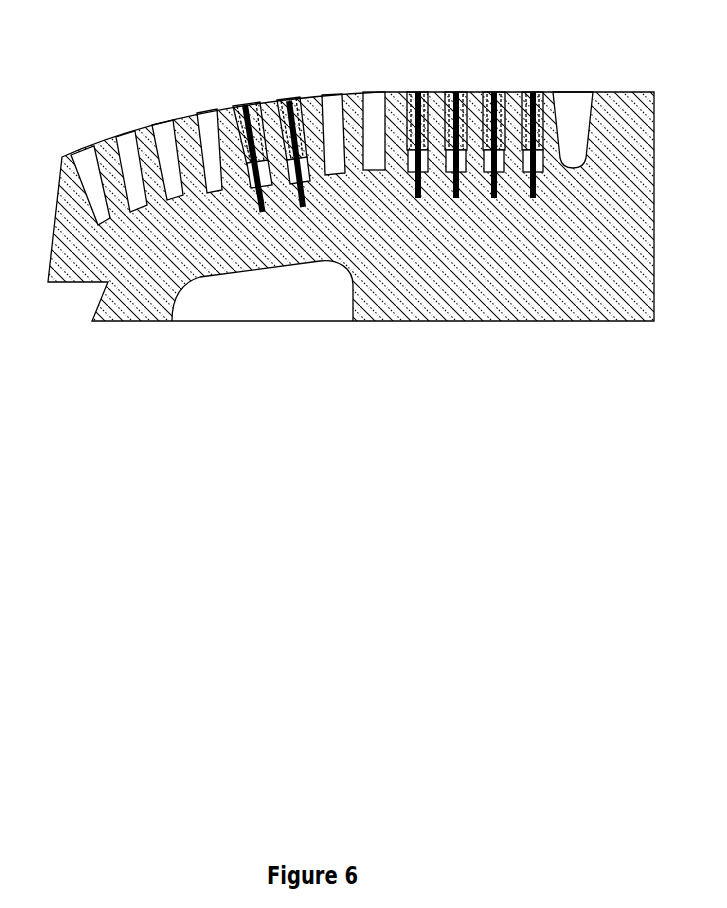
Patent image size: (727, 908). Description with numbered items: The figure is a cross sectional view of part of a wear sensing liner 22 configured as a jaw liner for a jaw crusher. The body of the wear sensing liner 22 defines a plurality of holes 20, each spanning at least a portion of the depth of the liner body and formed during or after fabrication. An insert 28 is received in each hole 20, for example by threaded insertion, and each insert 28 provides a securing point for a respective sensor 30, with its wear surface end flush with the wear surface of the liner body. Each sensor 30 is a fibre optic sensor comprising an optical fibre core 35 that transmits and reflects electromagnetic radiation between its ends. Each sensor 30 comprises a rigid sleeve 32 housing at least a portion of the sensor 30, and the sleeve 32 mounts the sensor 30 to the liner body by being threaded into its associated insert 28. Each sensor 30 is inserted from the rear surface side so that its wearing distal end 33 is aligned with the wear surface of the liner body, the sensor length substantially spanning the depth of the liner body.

The wear sensing liner 22 is at (90, 133).
The sensor 30 is at (244, 104).
The rigid sleeve 32 is at (235, 109).
The distal end 33 is at (252, 106).
The insert 28 is at (250, 168).
The optical fibre core 35 is at (258, 212).
The hole 20 is at (290, 186).